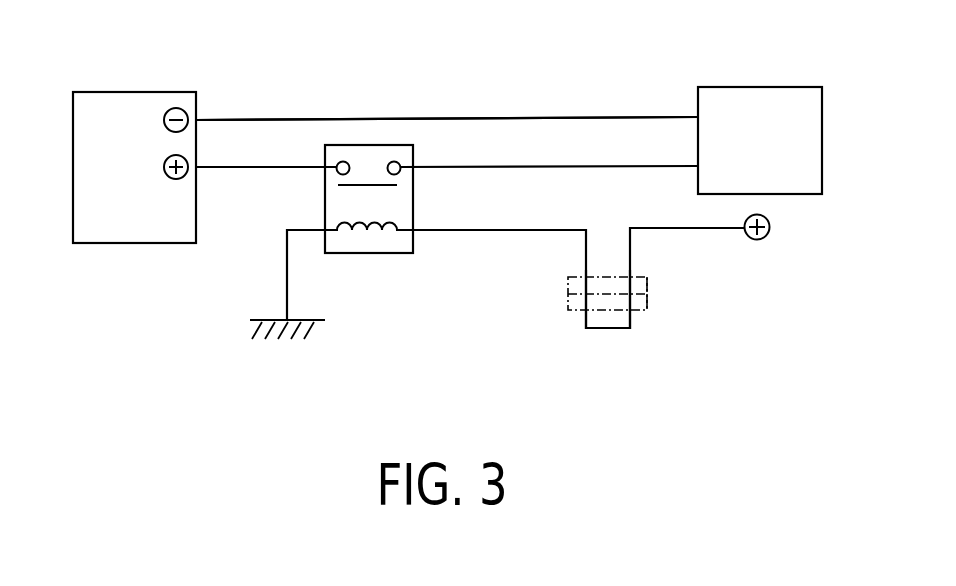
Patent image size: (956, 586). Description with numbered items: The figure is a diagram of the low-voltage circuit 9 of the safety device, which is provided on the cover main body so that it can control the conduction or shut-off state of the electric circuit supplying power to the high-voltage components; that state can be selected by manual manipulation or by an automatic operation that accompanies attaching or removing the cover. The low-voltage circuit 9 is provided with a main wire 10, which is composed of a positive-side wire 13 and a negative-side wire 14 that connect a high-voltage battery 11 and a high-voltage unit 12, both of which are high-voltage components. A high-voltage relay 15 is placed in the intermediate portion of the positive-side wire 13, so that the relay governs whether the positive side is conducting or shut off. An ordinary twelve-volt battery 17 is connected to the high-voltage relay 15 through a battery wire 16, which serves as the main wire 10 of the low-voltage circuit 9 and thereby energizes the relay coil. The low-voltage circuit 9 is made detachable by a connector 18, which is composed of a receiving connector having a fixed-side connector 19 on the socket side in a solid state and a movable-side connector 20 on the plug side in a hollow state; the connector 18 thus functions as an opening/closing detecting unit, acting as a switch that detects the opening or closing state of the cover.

The low-voltage circuit 9 is at (688, 53).
The main wire 10 is at (253, 113).
The high-voltage battery 11 is at (127, 227).
The high-voltage unit 12 is at (795, 95).
The positive-side wire 13 is at (242, 170).
The negative-side wire 14 is at (293, 118).
The high-voltage relay 15 is at (384, 255).
The battery wire 16 is at (503, 232).
The 12-V battery 17 is at (762, 240).
The connector 18 is at (583, 331).
The fixed-side connector 19 is at (649, 283).
The movable-side connector 20 is at (645, 313).